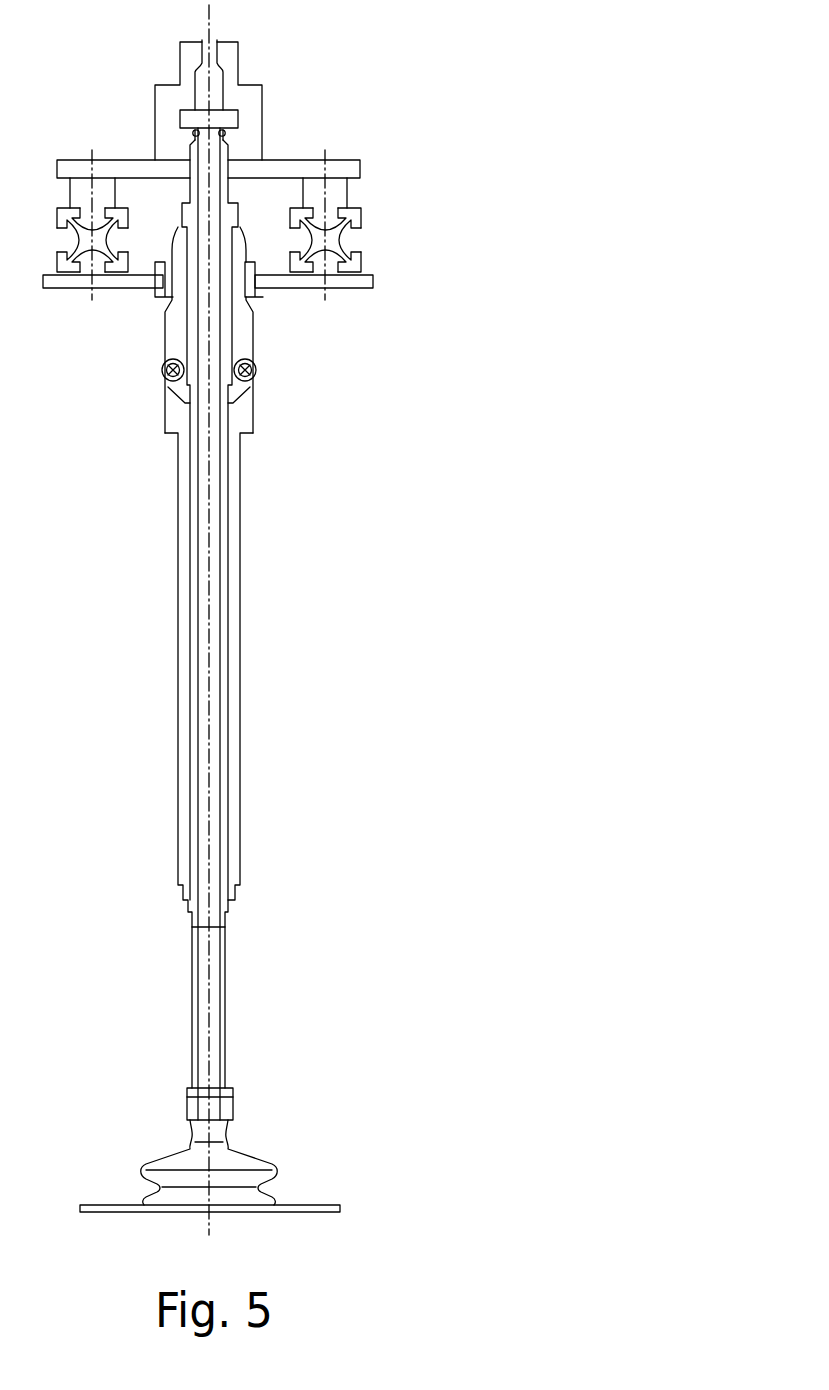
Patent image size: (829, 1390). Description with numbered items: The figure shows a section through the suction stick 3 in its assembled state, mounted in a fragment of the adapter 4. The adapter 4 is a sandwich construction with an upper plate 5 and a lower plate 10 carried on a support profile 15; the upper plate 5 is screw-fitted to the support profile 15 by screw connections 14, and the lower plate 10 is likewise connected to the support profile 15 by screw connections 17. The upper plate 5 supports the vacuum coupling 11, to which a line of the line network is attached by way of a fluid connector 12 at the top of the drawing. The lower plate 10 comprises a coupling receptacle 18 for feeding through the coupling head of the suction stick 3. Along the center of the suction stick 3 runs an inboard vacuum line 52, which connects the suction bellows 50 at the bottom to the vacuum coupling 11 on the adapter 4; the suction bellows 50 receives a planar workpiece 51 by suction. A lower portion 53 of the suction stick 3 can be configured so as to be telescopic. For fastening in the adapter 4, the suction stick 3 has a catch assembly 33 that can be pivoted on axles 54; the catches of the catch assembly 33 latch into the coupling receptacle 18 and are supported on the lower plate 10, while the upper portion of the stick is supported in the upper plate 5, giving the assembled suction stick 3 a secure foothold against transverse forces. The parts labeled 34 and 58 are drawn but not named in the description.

The suction stick 3 is at (334, 572).
The adapter 4 is at (413, 94).
The upper plate 5 is at (343, 165).
The lower plate 10 is at (373, 283).
The vacuum coupling 11 is at (112, 96).
The fluid connector 12 is at (240, 68).
The screw connections 14 is at (323, 156).
The support profile 15 is at (353, 212).
The screw connections 17 is at (328, 294).
The coupling receptacle 18 is at (263, 292).
The catch assembly 33 is at (164, 318).
The clamp body 34 is at (175, 236).
The suction bellows 50 is at (262, 1152).
The planar workpiece 51 is at (317, 1203).
The inboard vacuum line 52 is at (215, 822).
The lower portion 53 is at (165, 887).
The axles 54 is at (162, 377).
The housing 58 is at (218, 655).